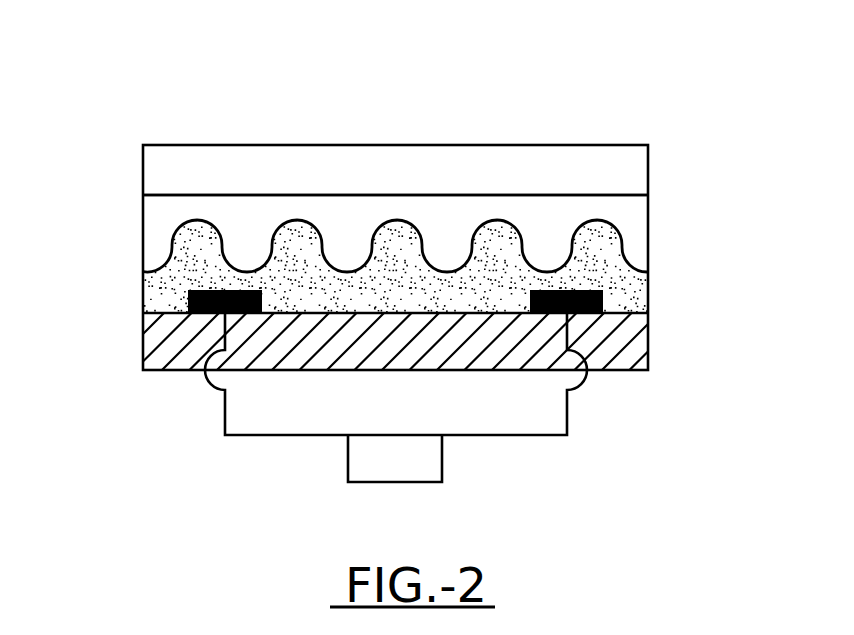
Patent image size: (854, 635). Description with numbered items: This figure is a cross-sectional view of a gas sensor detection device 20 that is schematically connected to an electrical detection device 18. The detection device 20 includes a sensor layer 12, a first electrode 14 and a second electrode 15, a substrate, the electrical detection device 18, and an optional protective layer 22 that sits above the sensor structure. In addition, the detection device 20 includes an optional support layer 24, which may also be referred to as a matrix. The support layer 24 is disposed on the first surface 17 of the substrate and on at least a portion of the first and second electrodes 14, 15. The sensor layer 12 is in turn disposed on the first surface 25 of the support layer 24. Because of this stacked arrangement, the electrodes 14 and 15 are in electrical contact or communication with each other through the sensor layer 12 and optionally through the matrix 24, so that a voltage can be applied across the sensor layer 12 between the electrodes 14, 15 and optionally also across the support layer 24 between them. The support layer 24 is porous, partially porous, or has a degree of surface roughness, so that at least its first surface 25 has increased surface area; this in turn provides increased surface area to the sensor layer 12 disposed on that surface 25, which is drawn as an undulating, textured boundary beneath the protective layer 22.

The detection device 20 is at (652, 109).
The protective layer 22 is at (294, 170).
The sensor layer 12 is at (177, 210).
The support layer 24 is at (490, 235).
The first surface of support layer 25 is at (582, 227).
The first electrode 14 is at (187, 300).
The second electrode 15 is at (597, 287).
The first surface of substrate 17 is at (628, 312).
The electrical detection device 18 is at (442, 455).